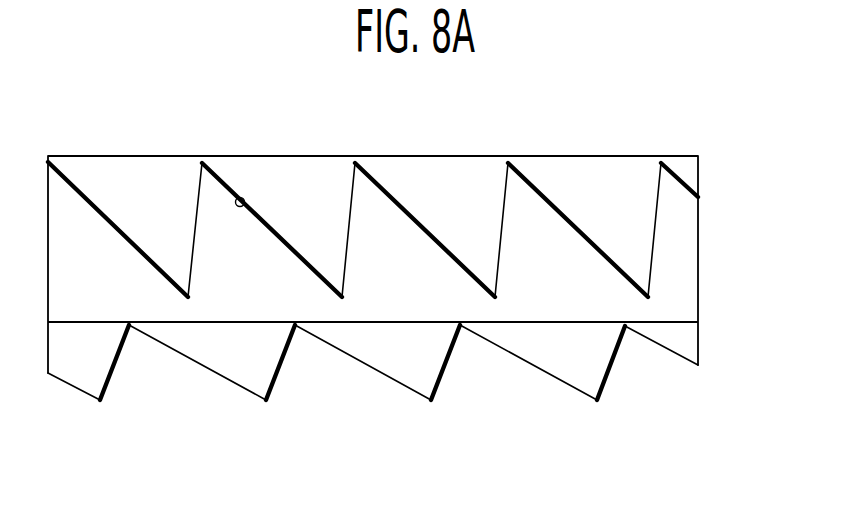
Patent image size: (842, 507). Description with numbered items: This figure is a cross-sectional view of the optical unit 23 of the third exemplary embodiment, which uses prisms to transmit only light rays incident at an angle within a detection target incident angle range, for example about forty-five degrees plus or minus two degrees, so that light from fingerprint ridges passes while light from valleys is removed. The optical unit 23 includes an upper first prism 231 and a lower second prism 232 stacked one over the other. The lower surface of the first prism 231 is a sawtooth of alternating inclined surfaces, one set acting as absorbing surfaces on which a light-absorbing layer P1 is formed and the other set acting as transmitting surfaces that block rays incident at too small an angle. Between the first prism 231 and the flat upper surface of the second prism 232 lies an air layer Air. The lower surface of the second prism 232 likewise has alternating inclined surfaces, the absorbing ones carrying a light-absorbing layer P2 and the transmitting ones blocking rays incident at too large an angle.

The optical unit 23 is at (712, 127).
The first prism 231 is at (409, 188).
The light-absorbing layer P1 is at (241, 198).
The air layer Air is at (690, 305).
The second prism 232 is at (409, 400).
The light-absorbing layer P2 is at (277, 372).